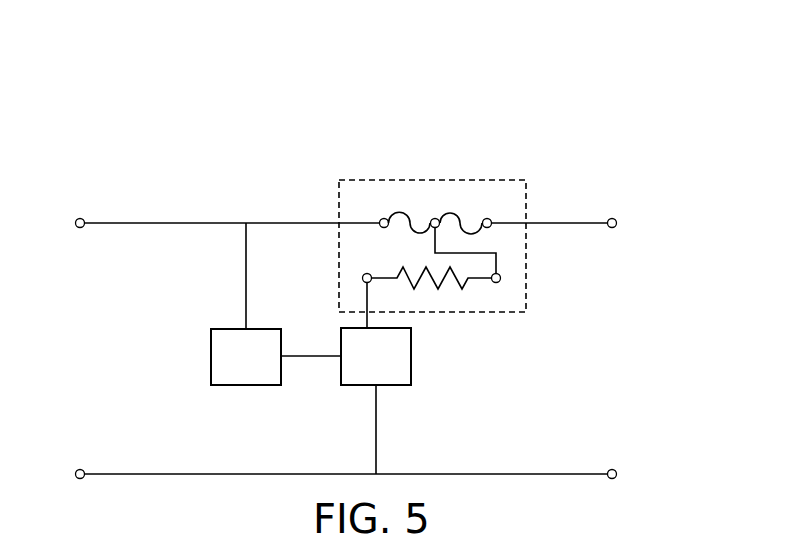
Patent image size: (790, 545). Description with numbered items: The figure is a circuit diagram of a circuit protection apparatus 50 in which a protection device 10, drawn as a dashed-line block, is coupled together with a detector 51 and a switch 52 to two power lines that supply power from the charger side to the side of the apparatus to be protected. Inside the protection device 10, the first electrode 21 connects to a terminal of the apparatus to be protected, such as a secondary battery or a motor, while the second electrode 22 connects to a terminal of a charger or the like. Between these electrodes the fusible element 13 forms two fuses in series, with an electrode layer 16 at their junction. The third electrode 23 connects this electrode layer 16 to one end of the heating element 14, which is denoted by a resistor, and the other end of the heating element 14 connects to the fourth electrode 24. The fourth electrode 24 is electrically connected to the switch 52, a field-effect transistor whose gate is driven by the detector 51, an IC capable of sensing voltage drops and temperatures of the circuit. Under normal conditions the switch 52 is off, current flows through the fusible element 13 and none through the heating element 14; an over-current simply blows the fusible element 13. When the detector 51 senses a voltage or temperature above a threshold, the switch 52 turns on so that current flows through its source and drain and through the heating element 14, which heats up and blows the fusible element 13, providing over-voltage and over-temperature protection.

The circuit protection apparatus 50 is at (633, 93).
The protection device 10 is at (527, 188).
The fusible element 13 is at (410, 212).
The first electrode 21 is at (384, 218).
The electrode layer 16 is at (435, 218).
The second electrode 22 is at (487, 218).
The heating element 14 is at (452, 290).
The fourth electrode 24 is at (362, 278).
The third electrode 23 is at (500, 278).
The detector 51 is at (211, 356).
The switch 52 is at (411, 375).